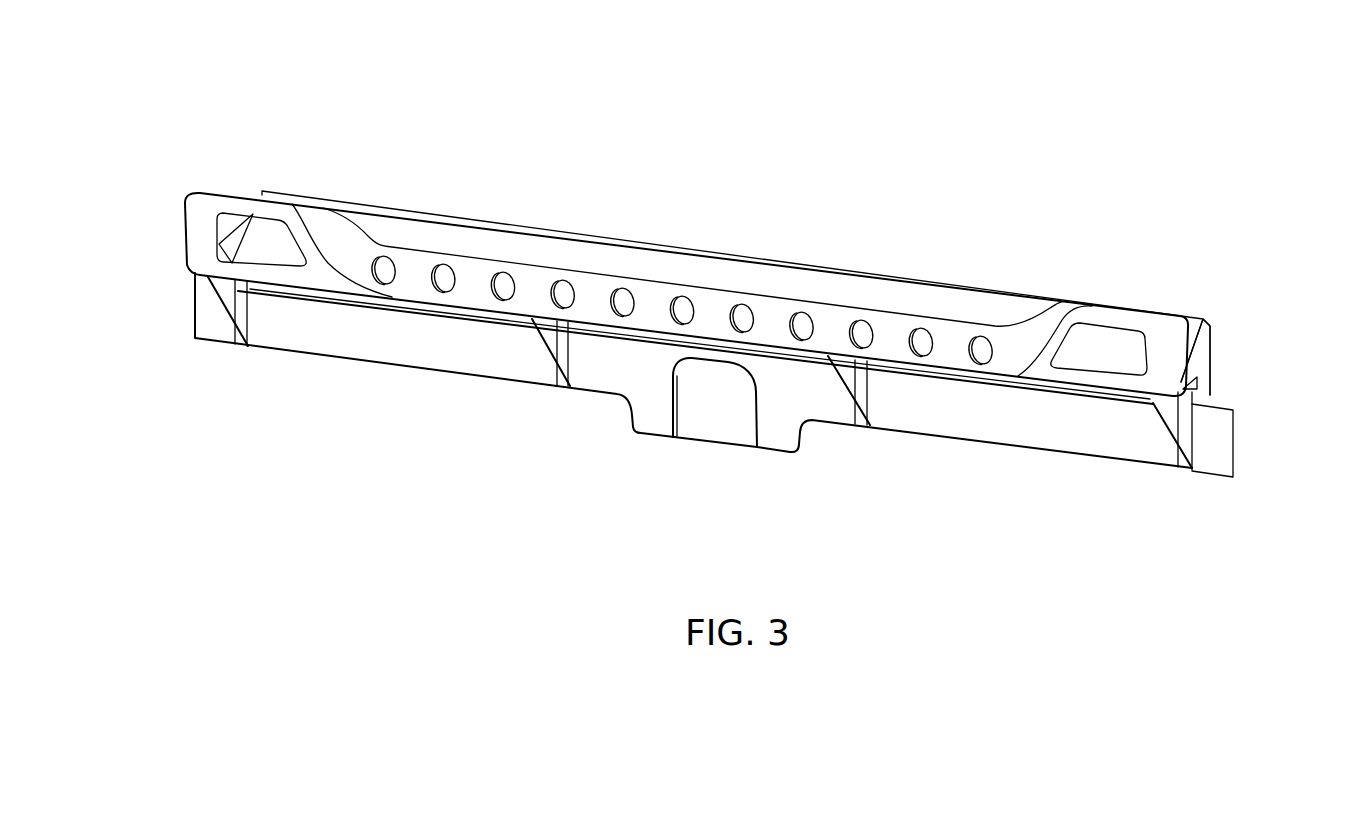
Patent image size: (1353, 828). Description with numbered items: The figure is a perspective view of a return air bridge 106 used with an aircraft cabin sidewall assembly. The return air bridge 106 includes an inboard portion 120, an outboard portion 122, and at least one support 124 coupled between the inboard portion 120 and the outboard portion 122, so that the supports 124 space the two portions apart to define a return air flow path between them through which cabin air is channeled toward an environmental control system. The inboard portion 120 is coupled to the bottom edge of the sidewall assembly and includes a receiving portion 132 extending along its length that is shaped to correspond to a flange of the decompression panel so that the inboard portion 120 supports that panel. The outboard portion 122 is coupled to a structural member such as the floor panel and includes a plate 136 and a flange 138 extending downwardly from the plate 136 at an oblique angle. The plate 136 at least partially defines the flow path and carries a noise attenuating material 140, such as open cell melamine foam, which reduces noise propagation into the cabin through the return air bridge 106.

The return air bridge 106 is at (216, 148).
The inboard portion 120 is at (202, 221).
The outboard portion 122 is at (1190, 393).
The support 124 is at (240, 297).
The receiving portion 132 is at (343, 238).
The plate 136 is at (1212, 351).
The flange 138 is at (1213, 462).
The noise attenuating material 140 is at (1003, 303).